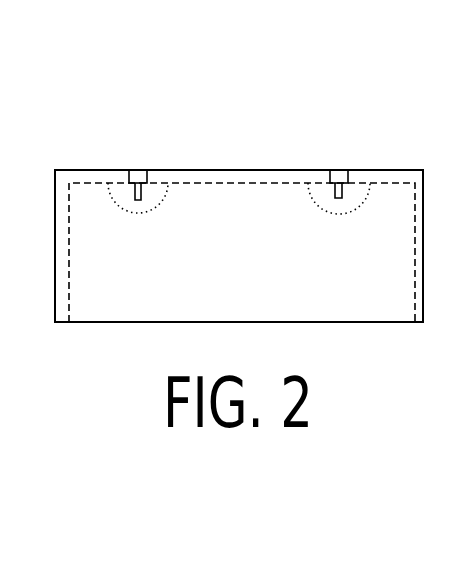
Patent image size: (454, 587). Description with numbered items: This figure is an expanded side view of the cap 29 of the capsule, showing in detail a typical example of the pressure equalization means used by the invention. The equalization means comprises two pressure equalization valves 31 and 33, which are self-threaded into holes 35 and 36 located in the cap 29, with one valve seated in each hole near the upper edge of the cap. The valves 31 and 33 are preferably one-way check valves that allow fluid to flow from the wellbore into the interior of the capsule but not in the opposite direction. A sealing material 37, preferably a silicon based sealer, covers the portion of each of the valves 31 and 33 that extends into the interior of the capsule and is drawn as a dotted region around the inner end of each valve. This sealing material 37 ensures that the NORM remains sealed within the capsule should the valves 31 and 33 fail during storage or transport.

The cap 29 is at (208, 207).
The pressure equalization valve 31 is at (133, 171).
The pressure equalization valve 33 is at (338, 170).
The hole 35 is at (148, 171).
The hole 36 is at (348, 172).
The sealing material 37 is at (130, 205).